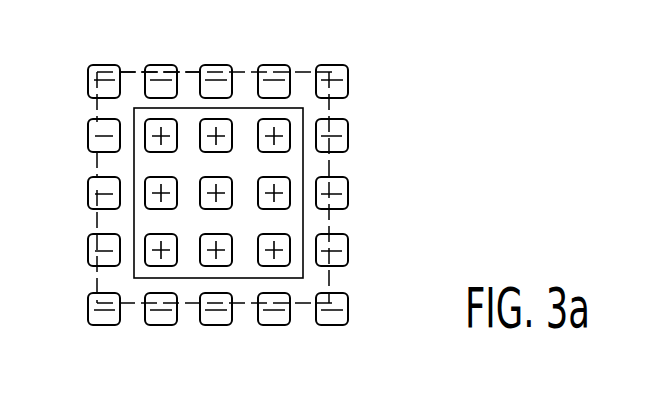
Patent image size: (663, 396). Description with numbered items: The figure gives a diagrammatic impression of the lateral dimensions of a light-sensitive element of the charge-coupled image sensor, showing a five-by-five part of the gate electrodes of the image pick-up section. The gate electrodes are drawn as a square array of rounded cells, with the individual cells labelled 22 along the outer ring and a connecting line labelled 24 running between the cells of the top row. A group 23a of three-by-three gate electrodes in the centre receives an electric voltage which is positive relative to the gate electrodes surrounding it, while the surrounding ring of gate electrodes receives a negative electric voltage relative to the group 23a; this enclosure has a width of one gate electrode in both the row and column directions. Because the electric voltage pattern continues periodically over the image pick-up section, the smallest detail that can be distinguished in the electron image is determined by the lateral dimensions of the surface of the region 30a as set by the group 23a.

The electrode elements (outer ring) 22 is at (350, 338).
The connecting line 24 is at (158, 72).
The group of gate electrodes 23a is at (242, 108).
The region 30a is at (100, 157).